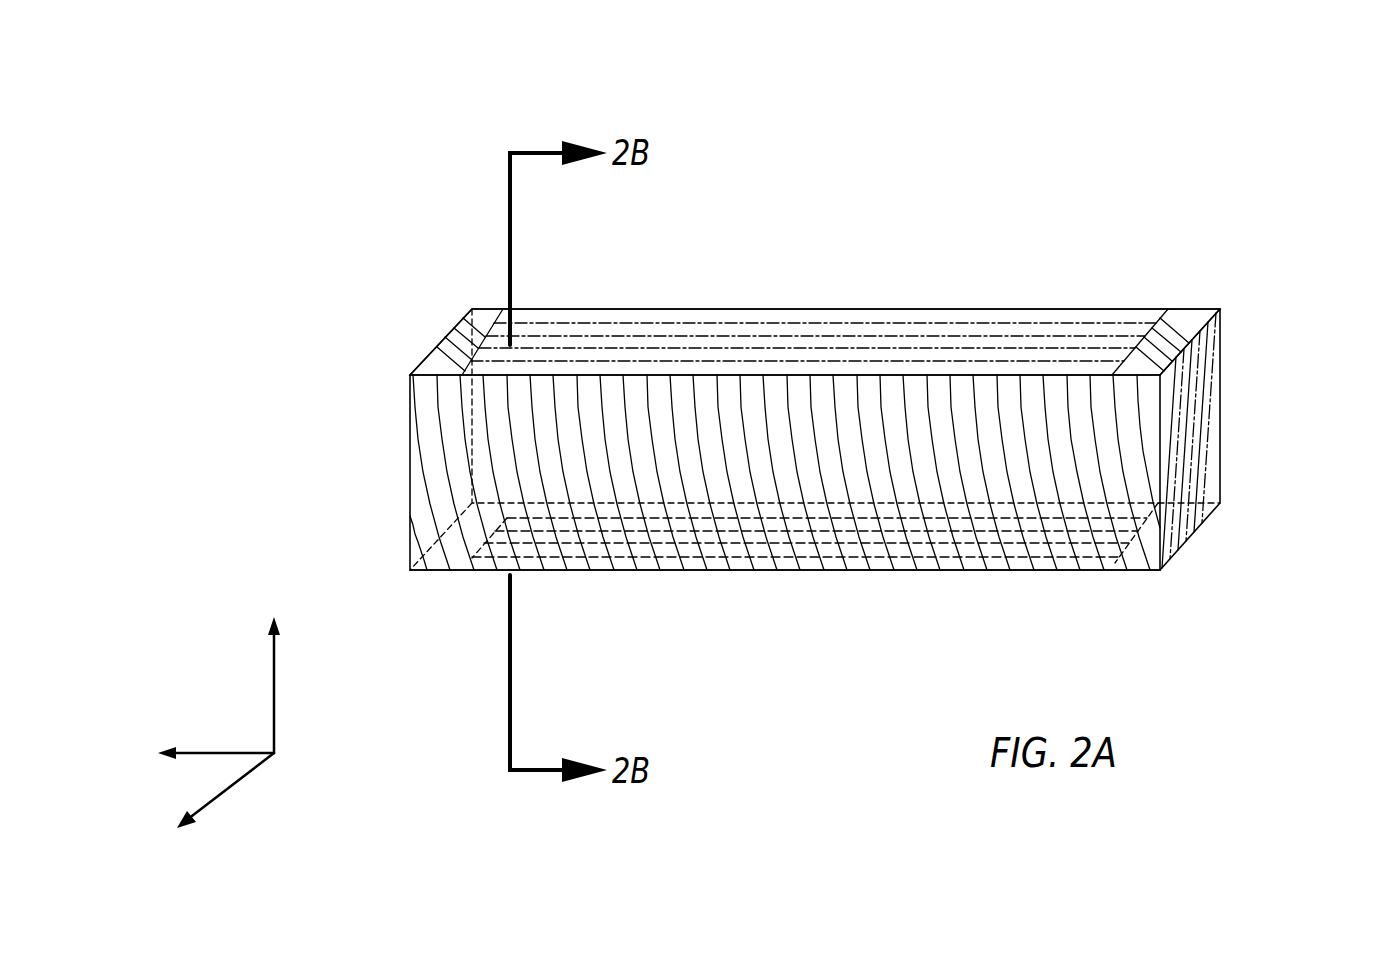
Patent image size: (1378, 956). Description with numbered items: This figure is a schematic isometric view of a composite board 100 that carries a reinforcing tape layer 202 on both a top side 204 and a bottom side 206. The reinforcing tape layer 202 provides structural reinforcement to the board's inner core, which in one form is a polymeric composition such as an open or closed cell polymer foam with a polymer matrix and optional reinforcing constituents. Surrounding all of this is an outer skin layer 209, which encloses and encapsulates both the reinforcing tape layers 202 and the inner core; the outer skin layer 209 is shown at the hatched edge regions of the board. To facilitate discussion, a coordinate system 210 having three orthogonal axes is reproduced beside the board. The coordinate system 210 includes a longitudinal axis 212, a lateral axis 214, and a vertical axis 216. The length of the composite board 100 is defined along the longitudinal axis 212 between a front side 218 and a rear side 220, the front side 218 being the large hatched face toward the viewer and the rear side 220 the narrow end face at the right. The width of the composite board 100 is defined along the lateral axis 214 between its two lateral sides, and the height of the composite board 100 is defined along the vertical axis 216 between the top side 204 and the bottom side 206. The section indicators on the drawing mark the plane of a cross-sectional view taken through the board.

The composite board 100 is at (1095, 112).
The reinforcing tape layer 202 is at (701, 330).
The top side 204 is at (855, 285).
The bottom side 206 is at (697, 577).
The outer skin layer 209 is at (478, 318).
The coordinate system 210 is at (256, 704).
The longitudinal axis 212 is at (219, 750).
The lateral axis 214 is at (240, 783).
The vertical axis 216 is at (277, 682).
The front side 218 is at (378, 487).
The rear side 220 is at (1189, 387).